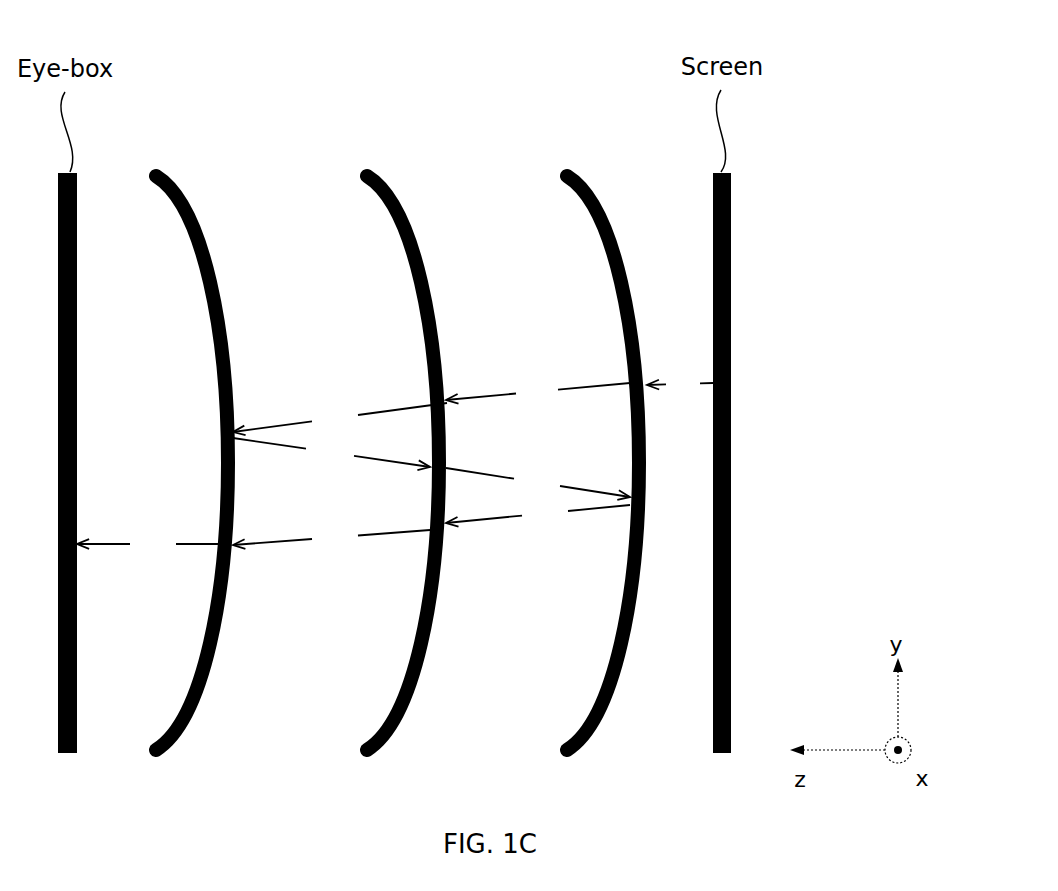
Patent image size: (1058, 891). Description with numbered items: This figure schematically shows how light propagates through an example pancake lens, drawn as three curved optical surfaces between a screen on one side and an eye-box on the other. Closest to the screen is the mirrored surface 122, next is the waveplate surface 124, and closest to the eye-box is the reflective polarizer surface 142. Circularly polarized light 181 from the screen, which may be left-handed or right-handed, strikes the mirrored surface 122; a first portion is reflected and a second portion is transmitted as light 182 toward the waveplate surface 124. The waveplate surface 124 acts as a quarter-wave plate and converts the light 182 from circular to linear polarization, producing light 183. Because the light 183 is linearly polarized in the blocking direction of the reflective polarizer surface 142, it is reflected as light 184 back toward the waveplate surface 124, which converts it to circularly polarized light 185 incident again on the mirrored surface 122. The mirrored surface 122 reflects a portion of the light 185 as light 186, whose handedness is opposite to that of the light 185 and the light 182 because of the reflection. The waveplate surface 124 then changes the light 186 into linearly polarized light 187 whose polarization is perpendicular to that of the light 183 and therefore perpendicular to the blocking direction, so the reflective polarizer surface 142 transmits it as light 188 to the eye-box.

The reflective polarizer surface 142 is at (152, 172).
The waveplate surface 124 is at (366, 172).
The mirrored surface 122 is at (566, 172).
The light 181 is at (680, 384).
The light 182 is at (538, 393).
The light 183 is at (340, 419).
The light 184 is at (331, 454).
The light 185 is at (538, 484).
The light 186 is at (538, 512).
The light 187 is at (331, 534).
The light 188 is at (147, 544).